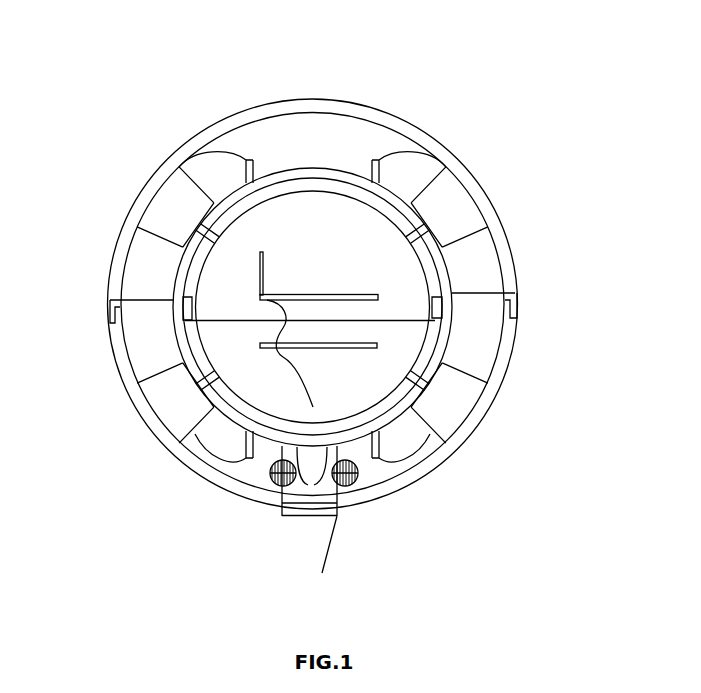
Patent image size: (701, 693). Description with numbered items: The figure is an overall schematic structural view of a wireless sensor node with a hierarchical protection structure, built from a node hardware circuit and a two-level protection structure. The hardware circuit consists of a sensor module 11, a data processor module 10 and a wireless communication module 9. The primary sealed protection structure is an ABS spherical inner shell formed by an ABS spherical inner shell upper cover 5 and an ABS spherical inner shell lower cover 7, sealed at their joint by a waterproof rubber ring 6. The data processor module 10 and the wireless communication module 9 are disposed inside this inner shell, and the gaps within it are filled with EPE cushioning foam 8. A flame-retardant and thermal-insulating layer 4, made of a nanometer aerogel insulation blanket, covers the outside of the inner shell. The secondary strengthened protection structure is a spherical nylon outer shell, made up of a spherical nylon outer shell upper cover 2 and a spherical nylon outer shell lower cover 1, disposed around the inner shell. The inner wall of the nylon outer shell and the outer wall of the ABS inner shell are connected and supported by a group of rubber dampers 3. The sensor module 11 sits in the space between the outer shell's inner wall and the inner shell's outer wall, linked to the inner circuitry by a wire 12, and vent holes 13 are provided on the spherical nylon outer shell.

The spherical nylon outer shell lower cover 1 is at (487, 398).
The spherical nylon outer shell upper cover 2 is at (491, 212).
The rubber dampers 3 is at (450, 208).
The flame-retardant and thermal-insulating layer 4 is at (373, 187).
The ABS spherical inner shell upper cover 5 is at (275, 187).
The waterproof rubber ring 6 is at (180, 272).
The ABS spherical inner shell lower cover 7 is at (199, 360).
The EPE cushioning foam 8 is at (232, 352).
The wireless communication module 9 is at (305, 297).
The data processor module 10 is at (313, 407).
The sensor module 11 is at (318, 343).
The wire 12 is at (313, 407).
The vent holes 13 is at (408, 437).